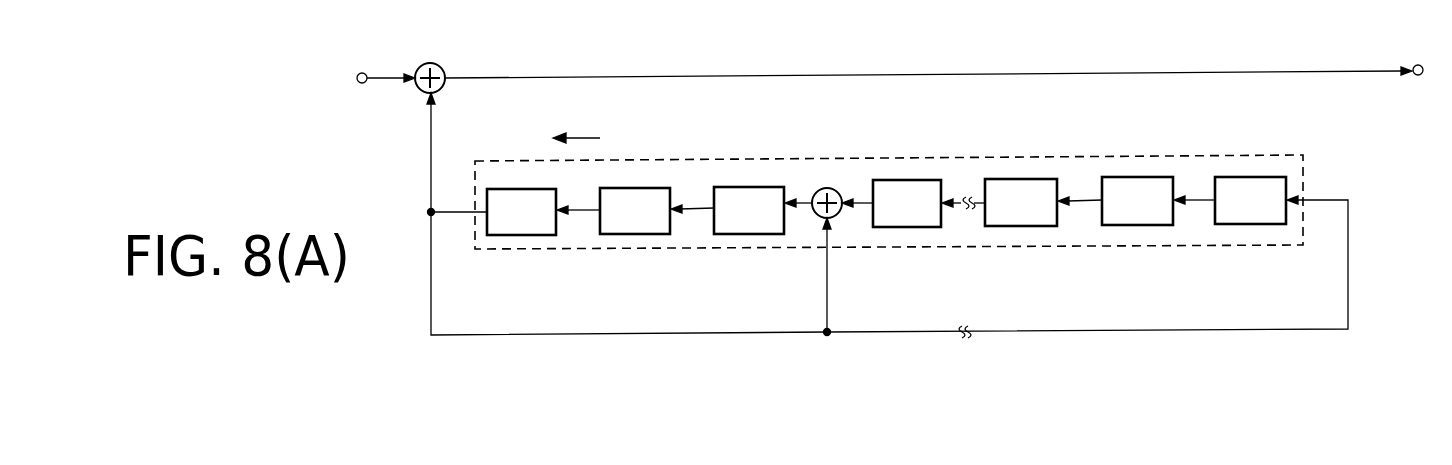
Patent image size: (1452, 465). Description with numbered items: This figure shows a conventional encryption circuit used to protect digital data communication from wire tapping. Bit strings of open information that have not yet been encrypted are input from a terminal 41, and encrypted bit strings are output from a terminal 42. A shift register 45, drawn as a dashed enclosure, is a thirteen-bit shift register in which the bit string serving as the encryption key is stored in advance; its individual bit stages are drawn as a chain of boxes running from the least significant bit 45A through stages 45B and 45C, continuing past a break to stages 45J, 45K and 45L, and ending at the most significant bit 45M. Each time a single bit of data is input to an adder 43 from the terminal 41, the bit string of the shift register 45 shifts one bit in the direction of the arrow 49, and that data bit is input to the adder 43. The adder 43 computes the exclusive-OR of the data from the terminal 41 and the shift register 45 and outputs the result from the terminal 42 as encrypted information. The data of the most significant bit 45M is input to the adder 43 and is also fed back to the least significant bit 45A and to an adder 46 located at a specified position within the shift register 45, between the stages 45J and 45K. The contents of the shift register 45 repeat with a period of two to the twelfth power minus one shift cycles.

The terminal 41 is at (362, 84).
The terminal 42 is at (1418, 76).
The adder 43 is at (443, 68).
The shift register 45 is at (1303, 168).
The least significant bit 45A is at (1250, 200).
The delay element 45B is at (1137, 201).
The delay element 45C is at (1021, 202).
The delay element 45J is at (907, 203).
The delay element 45K is at (749, 210).
The delay element 45L is at (635, 211).
The most significant bit 45M is at (521, 212).
The adder 46 is at (833, 187).
The arrow 49 is at (612, 115).